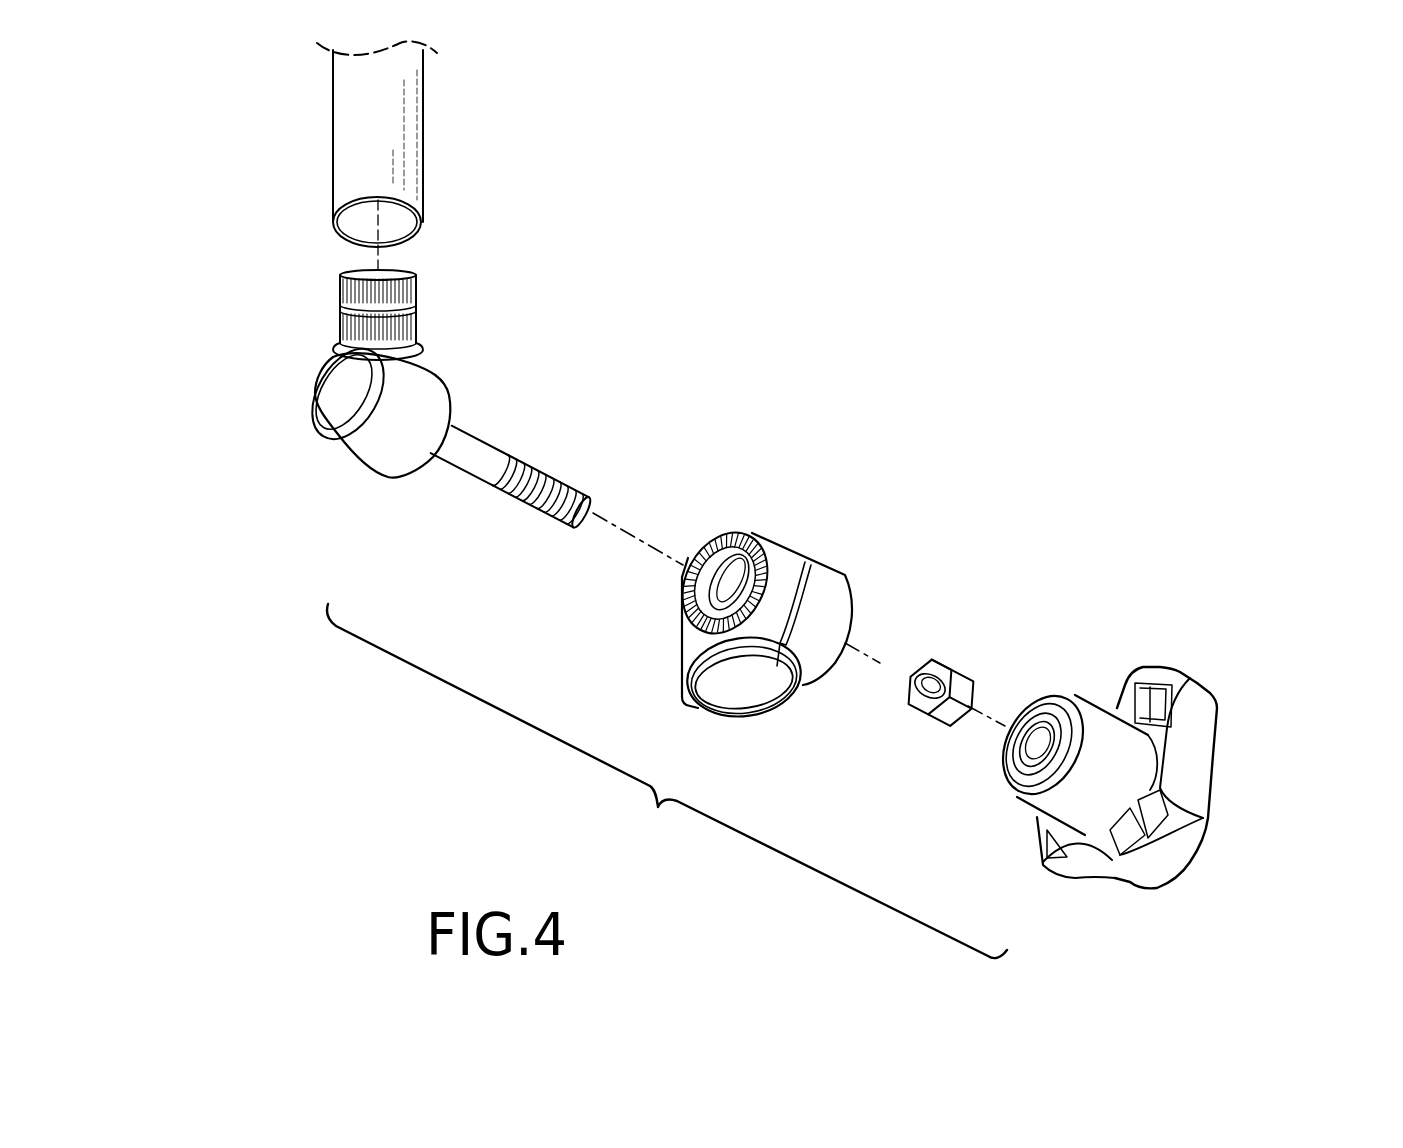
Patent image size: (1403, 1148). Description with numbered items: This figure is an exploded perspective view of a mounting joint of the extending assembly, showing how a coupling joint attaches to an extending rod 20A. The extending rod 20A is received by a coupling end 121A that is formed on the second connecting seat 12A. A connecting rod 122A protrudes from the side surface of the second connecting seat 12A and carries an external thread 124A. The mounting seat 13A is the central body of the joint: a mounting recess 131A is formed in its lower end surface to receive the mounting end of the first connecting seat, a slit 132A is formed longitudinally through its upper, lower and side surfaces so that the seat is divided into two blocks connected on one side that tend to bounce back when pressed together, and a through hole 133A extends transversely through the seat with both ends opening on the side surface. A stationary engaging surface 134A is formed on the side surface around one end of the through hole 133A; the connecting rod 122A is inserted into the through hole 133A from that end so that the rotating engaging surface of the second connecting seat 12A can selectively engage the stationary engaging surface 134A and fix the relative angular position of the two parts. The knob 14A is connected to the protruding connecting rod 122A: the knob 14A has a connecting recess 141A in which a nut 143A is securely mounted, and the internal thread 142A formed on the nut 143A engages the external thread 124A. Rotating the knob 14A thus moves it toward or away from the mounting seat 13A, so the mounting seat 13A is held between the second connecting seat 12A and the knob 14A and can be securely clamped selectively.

The extending rod 20A is at (407, 102).
The coupling end 121A is at (352, 285).
The second connecting seat 12A is at (368, 452).
The connecting rod 122A is at (467, 442).
The external thread 124A is at (567, 488).
The mounting seat 13A is at (838, 506).
The slit 132A is at (808, 592).
The through hole 133A is at (728, 590).
The stationary engaging surface 134A is at (712, 605).
The mounting recess 131A is at (725, 685).
The nut 143A is at (938, 689).
The internal thread 142A is at (923, 685).
The knob 14A is at (1095, 777).
The connecting recess 141A is at (1040, 750).